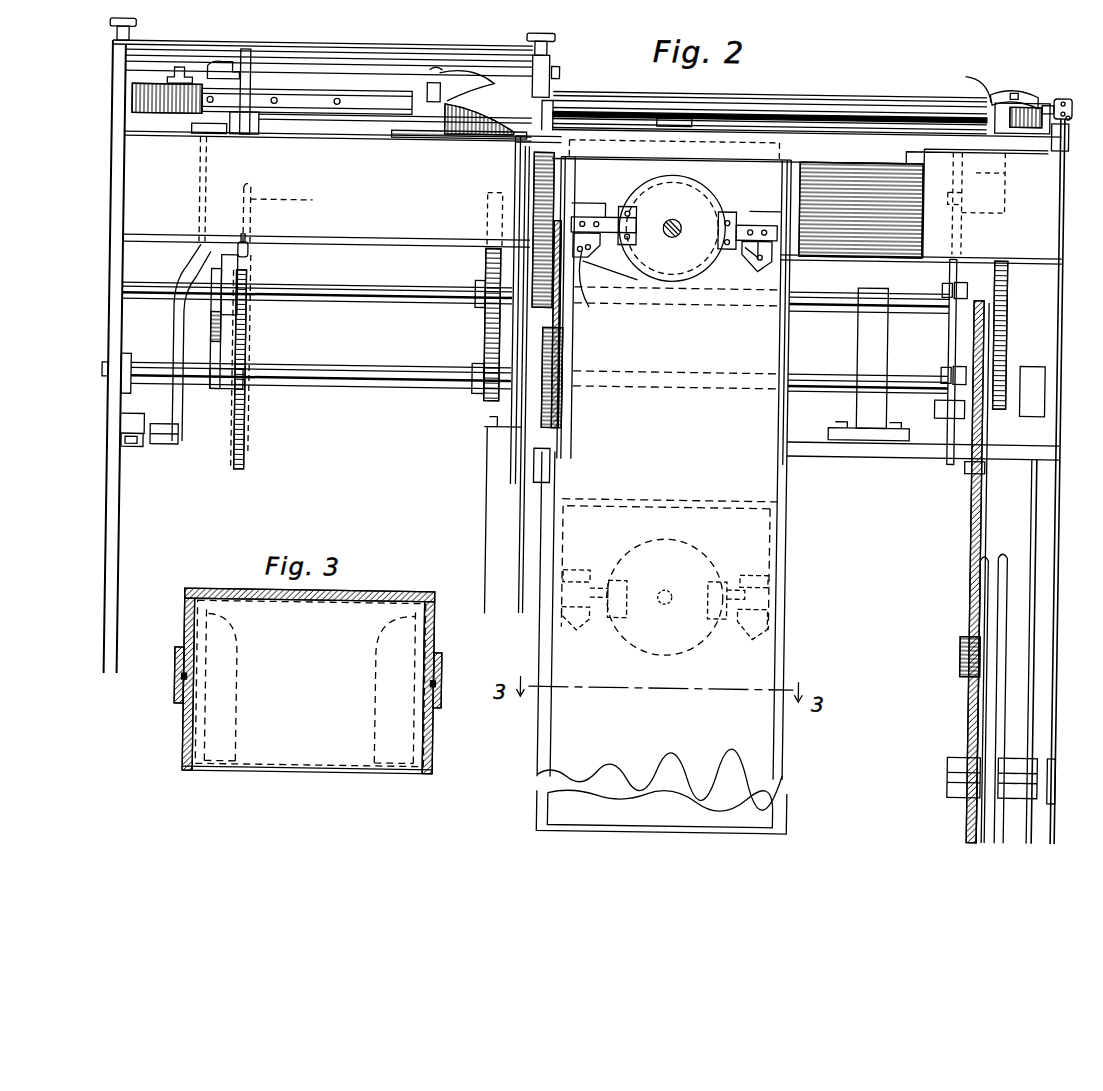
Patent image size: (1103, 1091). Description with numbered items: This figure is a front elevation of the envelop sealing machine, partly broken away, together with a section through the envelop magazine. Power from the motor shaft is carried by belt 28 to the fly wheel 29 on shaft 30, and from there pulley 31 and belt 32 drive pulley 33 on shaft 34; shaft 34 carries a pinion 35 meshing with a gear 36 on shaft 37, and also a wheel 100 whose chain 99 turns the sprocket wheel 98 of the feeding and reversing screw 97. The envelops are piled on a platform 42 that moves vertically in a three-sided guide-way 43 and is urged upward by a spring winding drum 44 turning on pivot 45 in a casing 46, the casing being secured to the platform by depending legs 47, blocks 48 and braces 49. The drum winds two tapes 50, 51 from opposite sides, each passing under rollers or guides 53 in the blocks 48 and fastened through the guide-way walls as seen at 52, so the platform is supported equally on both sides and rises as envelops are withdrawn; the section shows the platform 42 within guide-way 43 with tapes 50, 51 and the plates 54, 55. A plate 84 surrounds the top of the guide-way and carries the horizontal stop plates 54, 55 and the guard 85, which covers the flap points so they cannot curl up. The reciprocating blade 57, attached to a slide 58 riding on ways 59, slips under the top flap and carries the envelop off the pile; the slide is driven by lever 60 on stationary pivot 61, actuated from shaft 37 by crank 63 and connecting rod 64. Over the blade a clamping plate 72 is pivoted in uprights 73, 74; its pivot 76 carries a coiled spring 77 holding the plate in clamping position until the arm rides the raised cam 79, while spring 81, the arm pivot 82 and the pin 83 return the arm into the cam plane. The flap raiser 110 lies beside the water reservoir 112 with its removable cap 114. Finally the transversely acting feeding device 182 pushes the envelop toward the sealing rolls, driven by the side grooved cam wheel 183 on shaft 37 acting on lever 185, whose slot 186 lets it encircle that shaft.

In FIG. 2, the belt 28 is at (1005, 525).
In FIG. 2, the fly wheel 29 is at (1008, 600).
In FIG. 2, the shaft 30 is at (955, 755).
In FIG. 2, the pulley 31 is at (966, 642).
In FIG. 2, the belt 32 is at (970, 500).
In FIG. 2, the pulley 33 is at (971, 467).
In FIG. 2, the shaft 34 is at (483, 313).
In FIG. 2, the pinion 35 is at (483, 400).
In FIG. 2, the gear 36 is at (438, 367).
In FIG. 2, the shaft 37 is at (381, 292).
In FIG. 2, the platform 42 is at (668, 546).
In FIG. 3, the platform 42 is at (310, 683).
In FIG. 2, the guide-way 43 is at (795, 594).
In FIG. 3, the guide-way 43 is at (372, 590).
In FIG. 2, the spring winding drum 44 is at (693, 255).
In FIG. 2, the pivot 45 is at (674, 229).
In FIG. 2, the casing 46 is at (719, 193).
In FIG. 2, the depending legs 47 is at (783, 186).
In FIG. 2, the blocks 48 is at (765, 253).
In FIG. 2, the braces 49 is at (726, 214).
In FIG. 2, the tape 50 is at (583, 252).
In FIG. 3, the tape 50 is at (180, 681).
In FIG. 2, the tape 51 is at (751, 240).
In FIG. 3, the tape 51 is at (448, 688).
In FIG. 2, the fastening 52 is at (803, 225).
In FIG. 2, the rollers or guides 53 is at (594, 289).
In FIG. 3, the plate 54 is at (246, 730).
In FIG. 3, the plate 55 is at (380, 732).
In FIG. 2, the reciprocating blade 57 is at (822, 117).
In FIG. 2, the slide 58 is at (1003, 190).
In FIG. 2, the ways 59 is at (962, 162).
In FIG. 2, the lever 60 is at (950, 258).
In FIG. 2, the stationary pivot 61 is at (940, 396).
In FIG. 2, the crank 63 is at (943, 278).
In FIG. 2, the connecting rod 64 is at (943, 361).
In FIG. 2, the plate 72 is at (872, 108).
In FIG. 2, the upright 73 is at (553, 97).
In FIG. 2, the upright 74 is at (1003, 80).
In FIG. 2, the pivot 76 is at (970, 80).
In FIG. 2, the coiled spring 77 is at (1053, 86).
In FIG. 2, the raised cam 79 is at (1068, 133).
In FIG. 2, the spring 81 is at (1022, 92).
In FIG. 2, the arm pivot 82 is at (1068, 104).
In FIG. 2, the pin 83 is at (1014, 80).
In FIG. 2, the plate 84 is at (806, 195).
In FIG. 2, the guard 85 is at (687, 108).
In FIG. 2, the feeding and reversing screw 97 is at (312, 197).
In FIG. 2, the sprocket wheel 98 is at (250, 247).
In FIG. 2, the chain 99 is at (254, 408).
In FIG. 2, the wheel 100 is at (250, 458).
In FIG. 2, the flap raiser 110 is at (473, 123).
In FIG. 2, the water reservoir 112 is at (130, 101).
In FIG. 2, the removable cap 114 is at (160, 79).
In FIG. 2, the transversely acting feeding device 182 is at (279, 127).
In FIG. 2, the side grooved cam wheel 183 is at (240, 258).
In FIG. 2, the lever 185 is at (214, 311).
In FIG. 2, the slot 186 is at (185, 400).